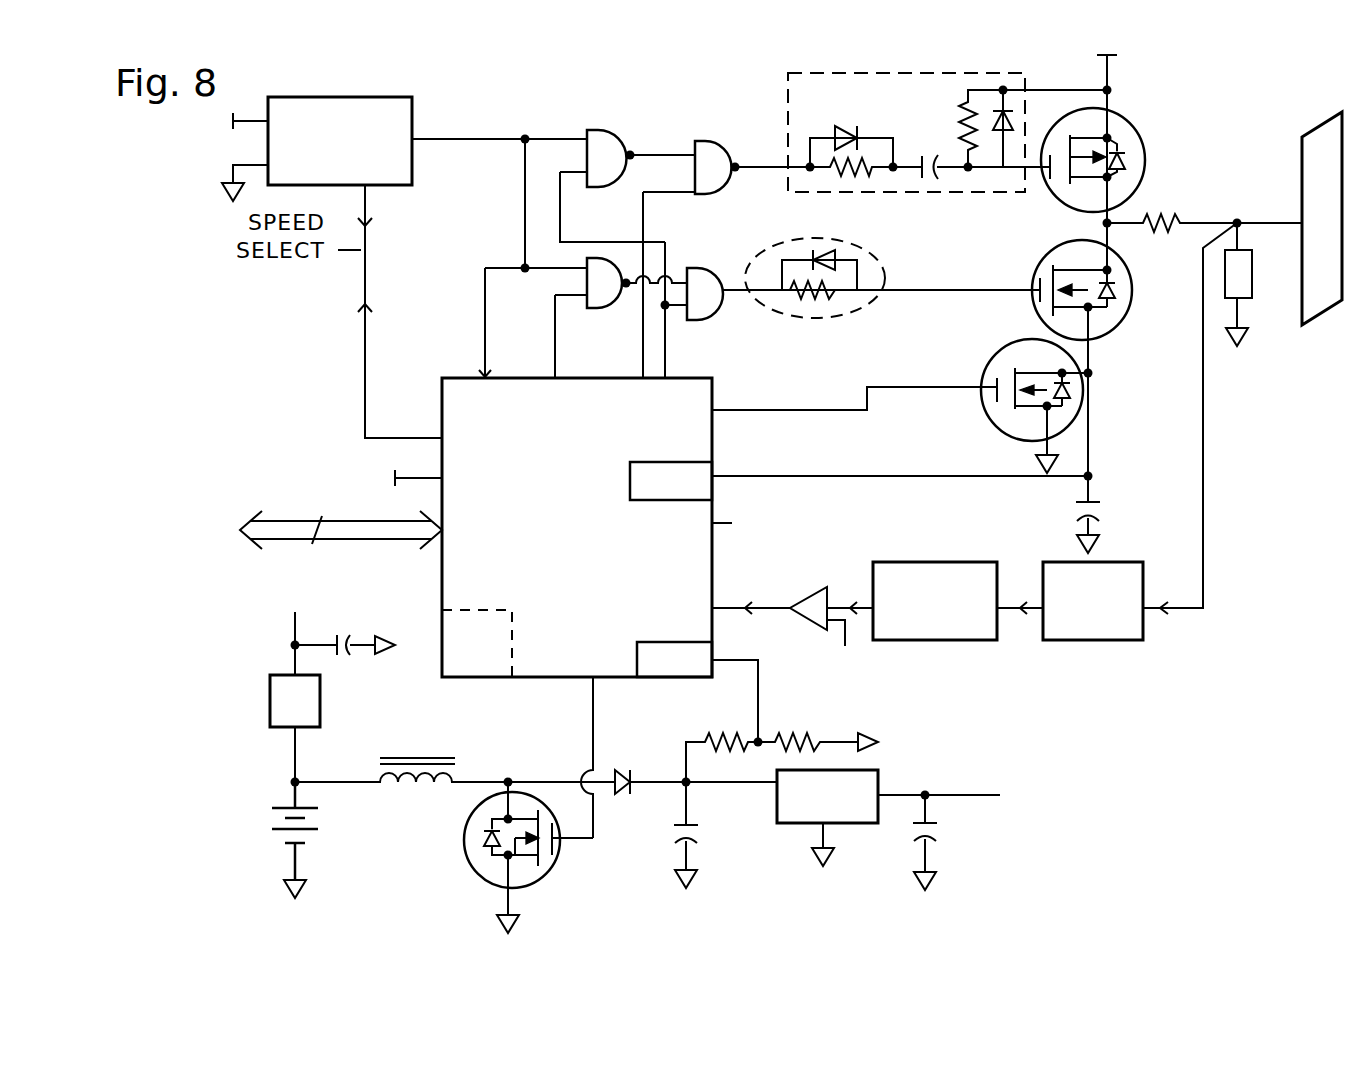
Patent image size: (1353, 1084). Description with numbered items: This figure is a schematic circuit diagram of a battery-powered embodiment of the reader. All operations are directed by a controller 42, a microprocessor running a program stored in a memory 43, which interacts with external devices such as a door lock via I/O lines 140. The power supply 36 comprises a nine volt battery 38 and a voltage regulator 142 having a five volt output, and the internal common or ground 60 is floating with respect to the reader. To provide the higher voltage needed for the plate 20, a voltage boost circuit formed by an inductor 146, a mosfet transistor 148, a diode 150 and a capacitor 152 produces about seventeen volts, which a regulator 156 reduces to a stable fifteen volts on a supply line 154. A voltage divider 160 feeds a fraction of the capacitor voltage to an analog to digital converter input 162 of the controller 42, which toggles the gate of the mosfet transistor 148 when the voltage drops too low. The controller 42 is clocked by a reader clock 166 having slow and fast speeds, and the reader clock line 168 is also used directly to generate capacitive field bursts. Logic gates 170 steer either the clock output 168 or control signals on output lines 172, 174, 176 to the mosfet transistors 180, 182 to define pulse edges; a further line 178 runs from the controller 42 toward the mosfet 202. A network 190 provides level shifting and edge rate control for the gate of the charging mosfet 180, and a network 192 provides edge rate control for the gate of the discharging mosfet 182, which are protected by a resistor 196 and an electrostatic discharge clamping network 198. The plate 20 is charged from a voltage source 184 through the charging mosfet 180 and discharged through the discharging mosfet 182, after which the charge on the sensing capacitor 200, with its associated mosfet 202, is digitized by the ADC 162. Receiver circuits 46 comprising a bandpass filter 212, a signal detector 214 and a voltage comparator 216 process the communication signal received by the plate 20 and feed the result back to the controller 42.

The plate 20 is at (1322, 143).
The power supply 36 is at (262, 734).
The battery 38 is at (270, 820).
The controller 42 is at (442, 573).
The memory 43 is at (462, 668).
The receiver circuits 46 is at (980, 655).
The ground 60 is at (393, 640).
The I/O lines 140 is at (310, 522).
The voltage regulator 142 is at (312, 725).
The inductor 146 is at (428, 795).
The mosfet transistor 148 is at (537, 875).
The diode 150 is at (616, 800).
The capacitor 152 is at (692, 836).
The supply line 154 is at (955, 790).
The regulator 156 is at (865, 782).
The voltage divider 160 is at (779, 732).
The analog to digital converter input 162 is at (630, 462).
The reader clock 166 is at (400, 165).
The reader clock line 168 is at (440, 138).
The logic gates 170 is at (658, 128).
The output line 172 is at (556, 336).
The output line 174 is at (644, 336).
The output line 176 is at (667, 354).
The port line 178 is at (745, 408).
The charging mosfet 180 is at (1128, 148).
The discharging mosfet 182 is at (1110, 268).
The voltage source 184 is at (1112, 71).
The network 190 is at (783, 87).
The network 192 is at (890, 268).
The resistor 196 is at (1157, 210).
The electrostatic discharge clamping network 198 is at (1245, 310).
The sensing capacitor 200 is at (1100, 508).
The mosfet 202 is at (1000, 418).
The bandpass filter 212 is at (1130, 620).
The signal detector 214 is at (960, 577).
The voltage comparator 216 is at (805, 600).